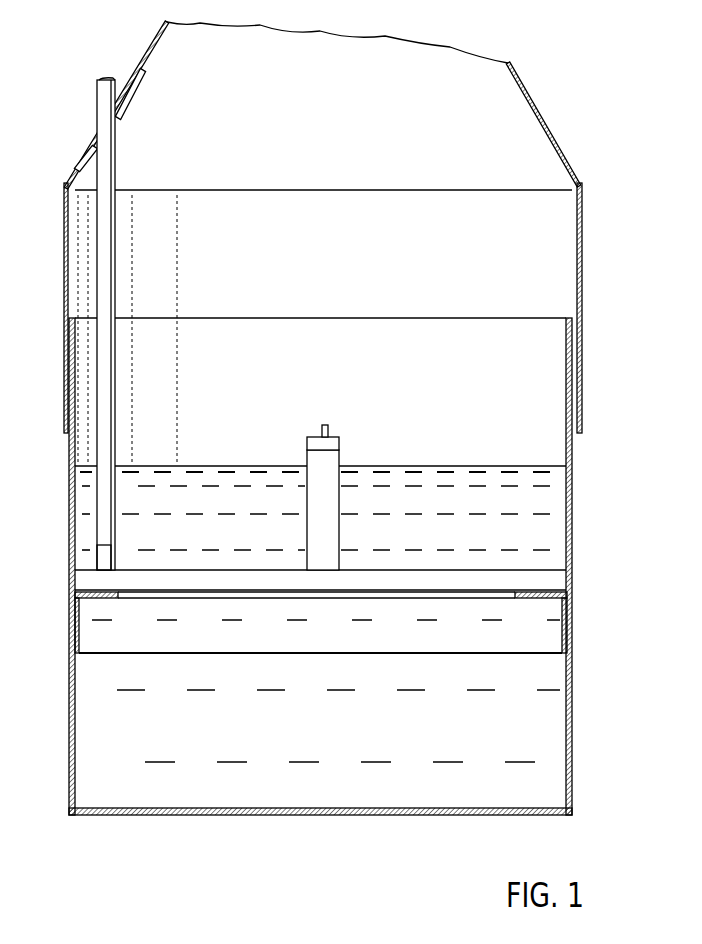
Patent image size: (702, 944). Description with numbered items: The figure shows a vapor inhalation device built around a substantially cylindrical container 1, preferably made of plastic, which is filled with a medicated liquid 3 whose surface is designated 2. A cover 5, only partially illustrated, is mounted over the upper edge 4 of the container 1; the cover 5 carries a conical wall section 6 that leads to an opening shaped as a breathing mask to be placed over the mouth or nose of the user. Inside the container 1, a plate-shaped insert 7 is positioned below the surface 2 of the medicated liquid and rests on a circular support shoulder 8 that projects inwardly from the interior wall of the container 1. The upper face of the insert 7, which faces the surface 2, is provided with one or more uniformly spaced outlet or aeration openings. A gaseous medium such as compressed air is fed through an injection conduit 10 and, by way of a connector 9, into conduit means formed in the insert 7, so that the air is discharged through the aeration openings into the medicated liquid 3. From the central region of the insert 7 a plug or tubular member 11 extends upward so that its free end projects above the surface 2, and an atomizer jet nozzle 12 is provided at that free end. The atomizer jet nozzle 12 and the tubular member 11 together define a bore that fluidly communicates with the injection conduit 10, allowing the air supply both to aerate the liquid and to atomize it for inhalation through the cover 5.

The container 1 is at (70, 745).
The surface of the medicated liquid 2 is at (532, 466).
The medicated liquid 3 is at (550, 540).
The upper edge 4 is at (573, 318).
The cover 5 is at (582, 267).
The conical wall section 6 is at (545, 119).
The insert 7 is at (557, 584).
The support shoulder 8 is at (570, 627).
The connector 9 is at (103, 557).
The injection conduit 10 is at (108, 80).
The tubular member 11 is at (330, 463).
The atomizer jet nozzle 12 is at (332, 443).